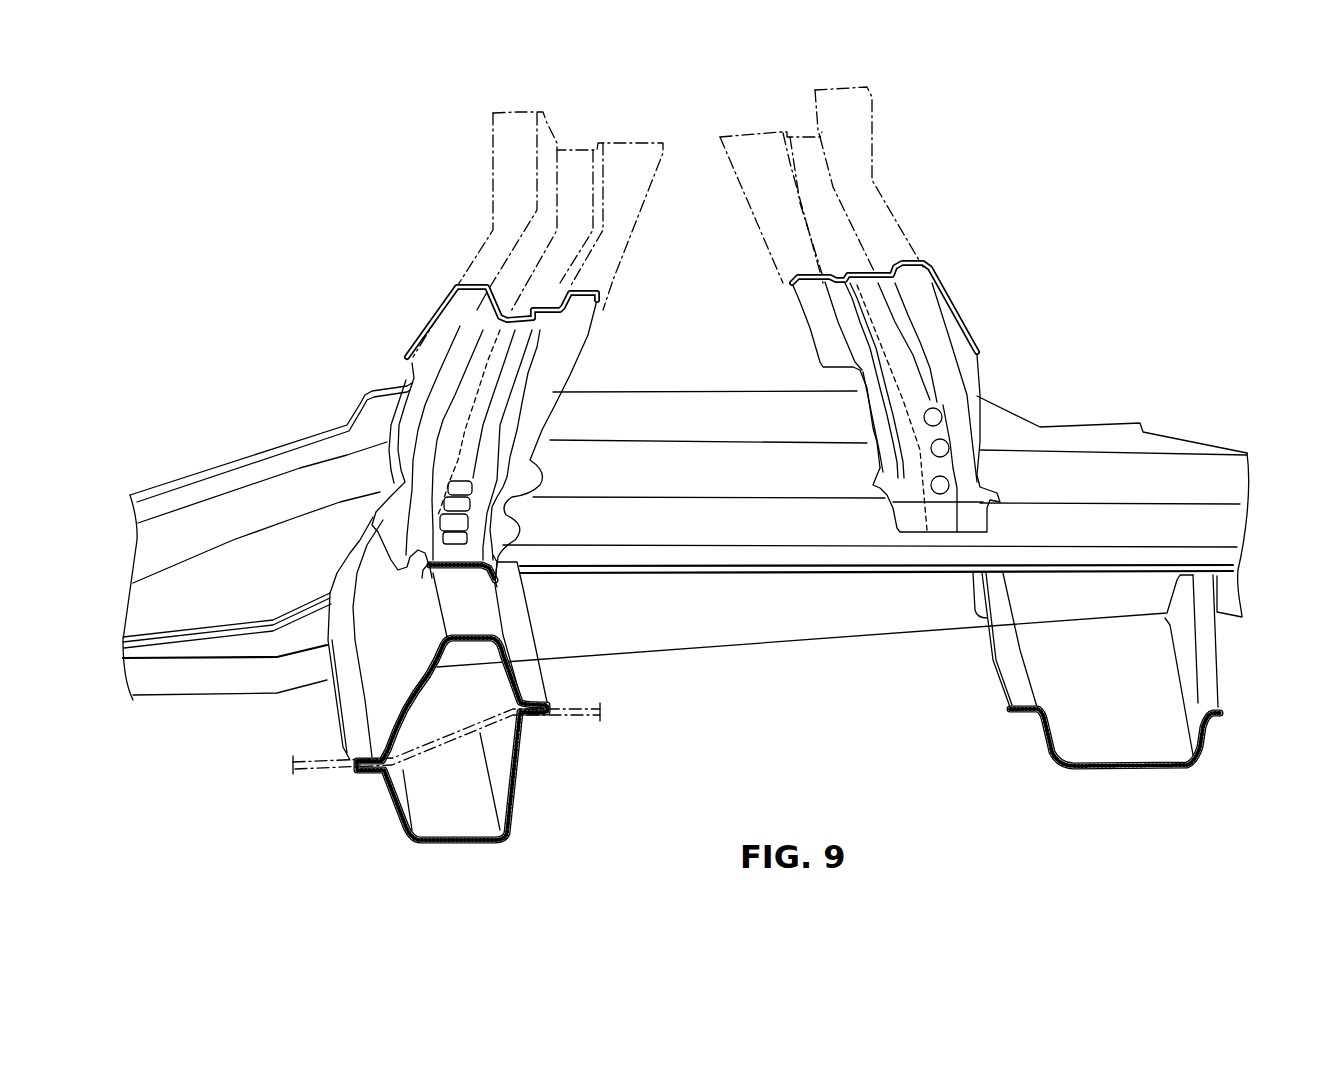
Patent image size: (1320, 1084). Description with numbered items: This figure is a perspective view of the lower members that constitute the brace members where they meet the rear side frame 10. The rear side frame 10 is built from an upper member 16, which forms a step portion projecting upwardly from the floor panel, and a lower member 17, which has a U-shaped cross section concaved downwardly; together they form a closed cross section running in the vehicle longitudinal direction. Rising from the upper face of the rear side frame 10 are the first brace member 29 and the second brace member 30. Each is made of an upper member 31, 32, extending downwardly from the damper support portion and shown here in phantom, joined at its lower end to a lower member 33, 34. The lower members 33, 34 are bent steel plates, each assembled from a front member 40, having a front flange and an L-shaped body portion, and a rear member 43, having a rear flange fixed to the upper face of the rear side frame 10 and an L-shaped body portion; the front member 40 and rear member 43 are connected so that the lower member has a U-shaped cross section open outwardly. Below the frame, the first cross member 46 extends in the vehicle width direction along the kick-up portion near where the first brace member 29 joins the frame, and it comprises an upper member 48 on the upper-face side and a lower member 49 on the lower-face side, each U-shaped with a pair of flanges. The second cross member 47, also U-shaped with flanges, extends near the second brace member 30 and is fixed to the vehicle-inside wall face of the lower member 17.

The rear side frame 10 is at (1217, 523).
The upper member 16 is at (1167, 470).
The lower member 17 is at (857, 617).
The first brace member 29 is at (443, 260).
The second brace member 30 is at (947, 250).
The upper member 31 is at (493, 180).
The upper member 32 is at (877, 190).
The lower member 33 is at (407, 327).
The lower member 34 is at (980, 303).
The front member 40 is at (412, 373).
The rear member 43 is at (537, 357).
The first cross member 46 is at (373, 807).
The second cross member 47 is at (1050, 770).
The upper member 48 is at (370, 703).
The lower member 49 is at (517, 768).